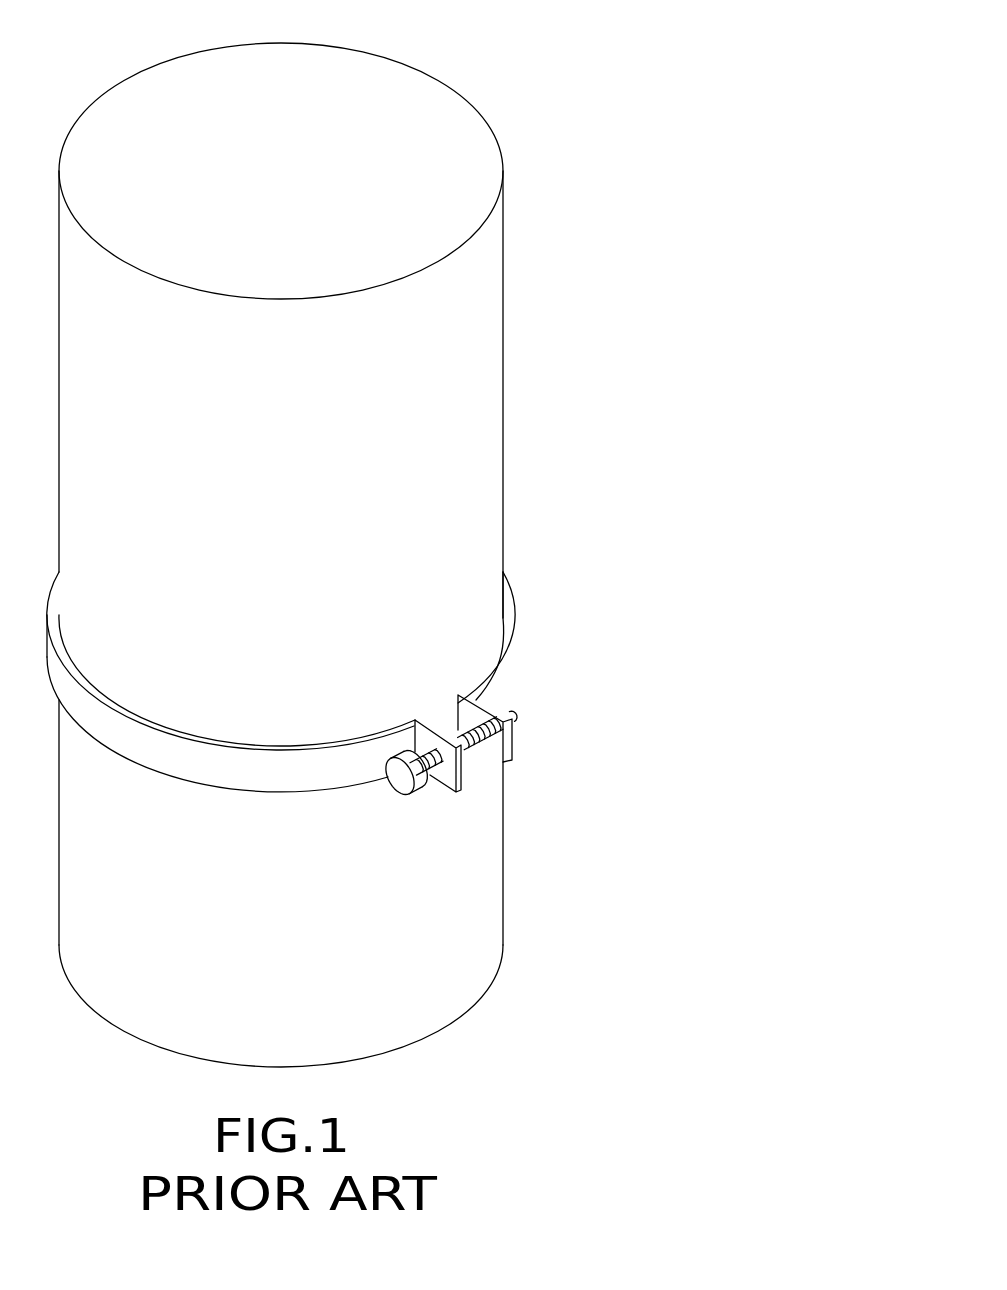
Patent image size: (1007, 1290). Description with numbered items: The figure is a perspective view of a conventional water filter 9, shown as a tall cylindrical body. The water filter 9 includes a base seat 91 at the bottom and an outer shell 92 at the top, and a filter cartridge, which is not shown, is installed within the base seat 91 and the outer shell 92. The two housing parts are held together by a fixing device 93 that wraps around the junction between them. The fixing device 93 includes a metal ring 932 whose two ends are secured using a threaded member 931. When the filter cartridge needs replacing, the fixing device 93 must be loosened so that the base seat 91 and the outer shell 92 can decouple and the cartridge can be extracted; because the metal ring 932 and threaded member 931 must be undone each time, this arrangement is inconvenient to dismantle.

The water filter 9 is at (371, 538).
The base seat 91 is at (474, 850).
The outer shell 92 is at (445, 328).
The fixing device 93 is at (371, 736).
The threaded member 931 is at (403, 783).
The metal ring 932 is at (505, 667).